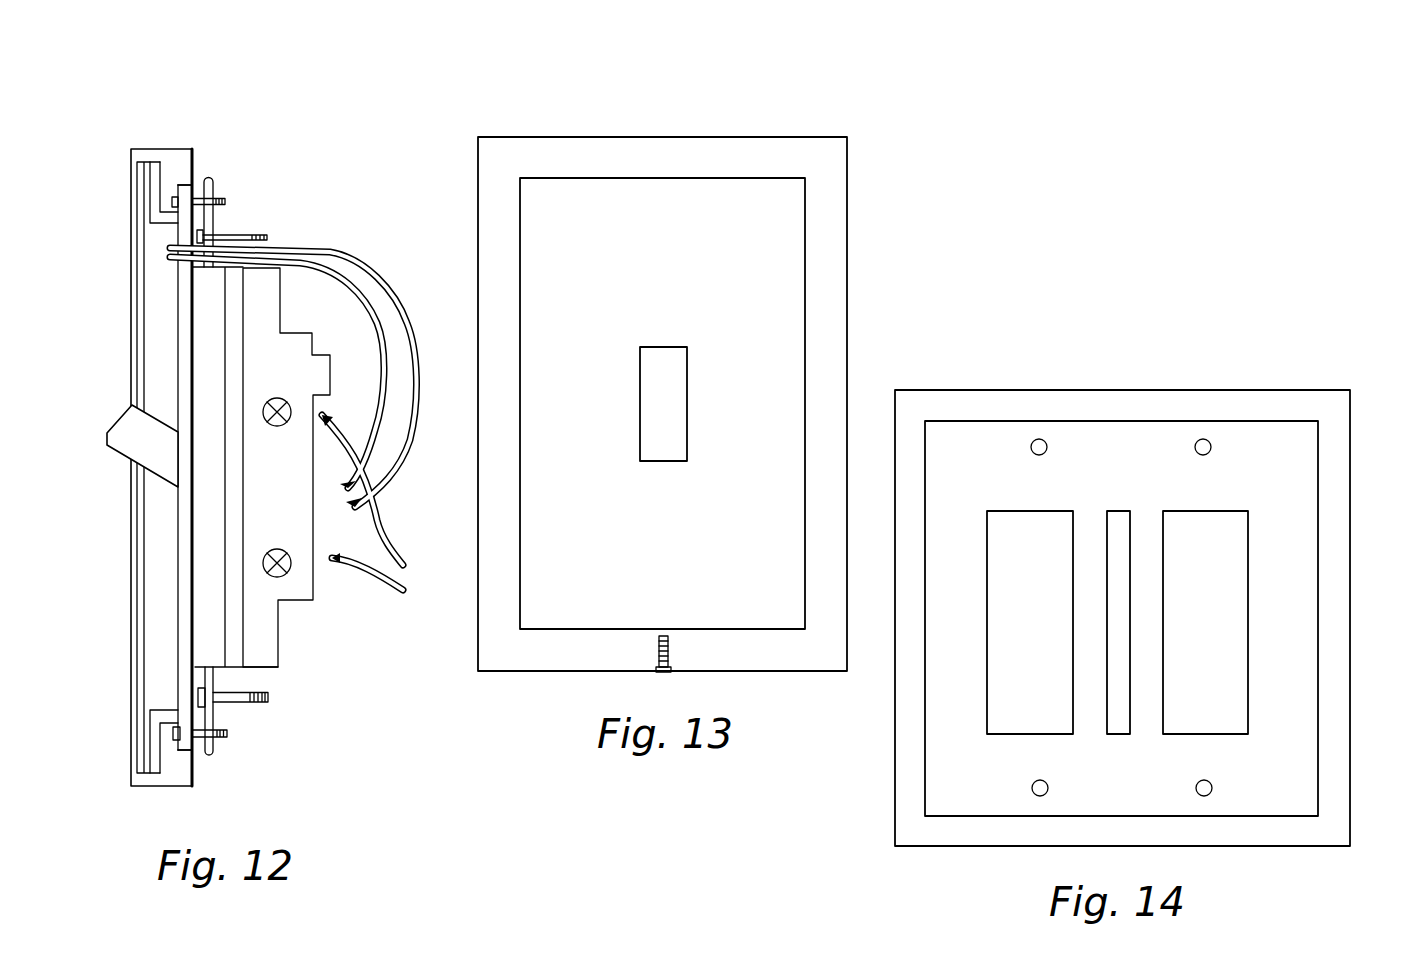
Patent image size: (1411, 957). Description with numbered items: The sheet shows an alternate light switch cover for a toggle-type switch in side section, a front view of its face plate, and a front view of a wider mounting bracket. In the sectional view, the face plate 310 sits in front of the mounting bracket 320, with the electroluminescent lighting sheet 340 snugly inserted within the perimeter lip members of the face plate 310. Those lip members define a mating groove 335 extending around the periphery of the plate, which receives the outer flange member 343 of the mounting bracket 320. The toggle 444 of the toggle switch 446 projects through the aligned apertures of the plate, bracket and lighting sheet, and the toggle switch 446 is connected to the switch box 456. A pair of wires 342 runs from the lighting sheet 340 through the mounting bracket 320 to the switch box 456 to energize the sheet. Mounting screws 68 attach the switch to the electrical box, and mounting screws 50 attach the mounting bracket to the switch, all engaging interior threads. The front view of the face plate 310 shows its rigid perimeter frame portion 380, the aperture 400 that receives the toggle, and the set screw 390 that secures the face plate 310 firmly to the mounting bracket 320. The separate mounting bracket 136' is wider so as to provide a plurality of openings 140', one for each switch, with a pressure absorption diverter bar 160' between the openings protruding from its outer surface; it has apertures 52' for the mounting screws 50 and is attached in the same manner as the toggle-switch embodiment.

In FIG. 12, the mounting screws 50 is at (223, 197).
In FIG. 14, the apertures 52' is at (1126, 616).
In FIG. 12, the mounting screws 68 is at (262, 230).
In FIG. 14, the mounting bracket 136' is at (1106, 634).
In FIG. 14, the openings 140' is at (1117, 622).
In FIG. 14, the pressure absorption diverter bar 160' is at (1153, 603).
In FIG. 12, the face plate 310 is at (130, 790).
In FIG. 13, the face plate 310 is at (520, 125).
In FIG. 12, the mounting bracket 320 is at (175, 545).
In FIG. 12, the mating groove 335 is at (158, 162).
In FIG. 12, the electroluminescent lighting sheet 340 is at (140, 310).
In FIG. 12, the wires 342 is at (340, 300).
In FIG. 12, the outer flange member 343 is at (167, 187).
In FIG. 12, the rigid perimeter frame portion 380 is at (185, 168).
In FIG. 13, the rigid perimeter frame portion 380 is at (737, 147).
In FIG. 13, the set screw 390 is at (662, 672).
In FIG. 13, the aperture 400 is at (673, 350).
In FIG. 12, the toggle 444 is at (124, 452).
In FIG. 12, the toggle switch 446 is at (240, 667).
In FIG. 12, the switch box 456 is at (315, 568).